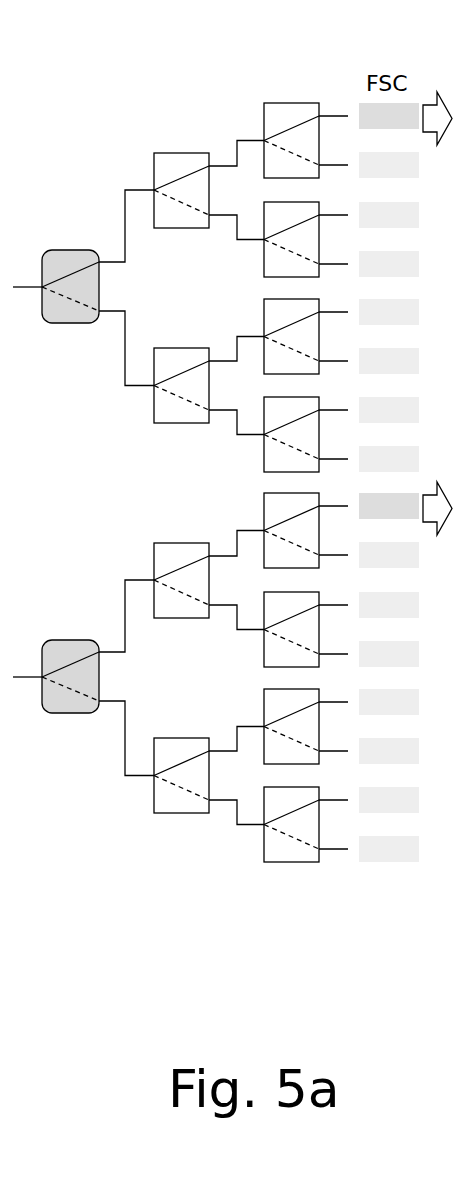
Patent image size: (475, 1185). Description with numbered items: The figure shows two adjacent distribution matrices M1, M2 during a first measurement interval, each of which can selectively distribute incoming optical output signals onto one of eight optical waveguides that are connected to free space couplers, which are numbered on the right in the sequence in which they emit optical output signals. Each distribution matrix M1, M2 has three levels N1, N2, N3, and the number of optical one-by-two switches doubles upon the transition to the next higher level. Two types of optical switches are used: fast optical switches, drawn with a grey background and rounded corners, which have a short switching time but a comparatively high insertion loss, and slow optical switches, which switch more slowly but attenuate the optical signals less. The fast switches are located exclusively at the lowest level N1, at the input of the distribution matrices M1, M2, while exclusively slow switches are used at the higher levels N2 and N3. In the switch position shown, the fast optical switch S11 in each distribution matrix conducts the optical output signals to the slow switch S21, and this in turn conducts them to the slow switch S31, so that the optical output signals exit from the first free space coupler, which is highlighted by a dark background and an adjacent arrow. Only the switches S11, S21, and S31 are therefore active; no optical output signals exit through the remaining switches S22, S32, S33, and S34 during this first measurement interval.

The fast optical switch S11 is at (55, 257).
The slow switch S21 is at (157, 178).
The slow switch S22 is at (157, 411).
The slow switch S31 is at (272, 117).
The slow switch S32 is at (272, 264).
The slow switch S33 is at (272, 322).
The slow switch S34 is at (272, 462).
The lowest level N1 is at (56, 506).
The second level N2 is at (126, 484).
The third level N3 is at (259, 481).
The distribution matrix M1 is at (126, 444).
The distribution matrix M2 is at (126, 834).